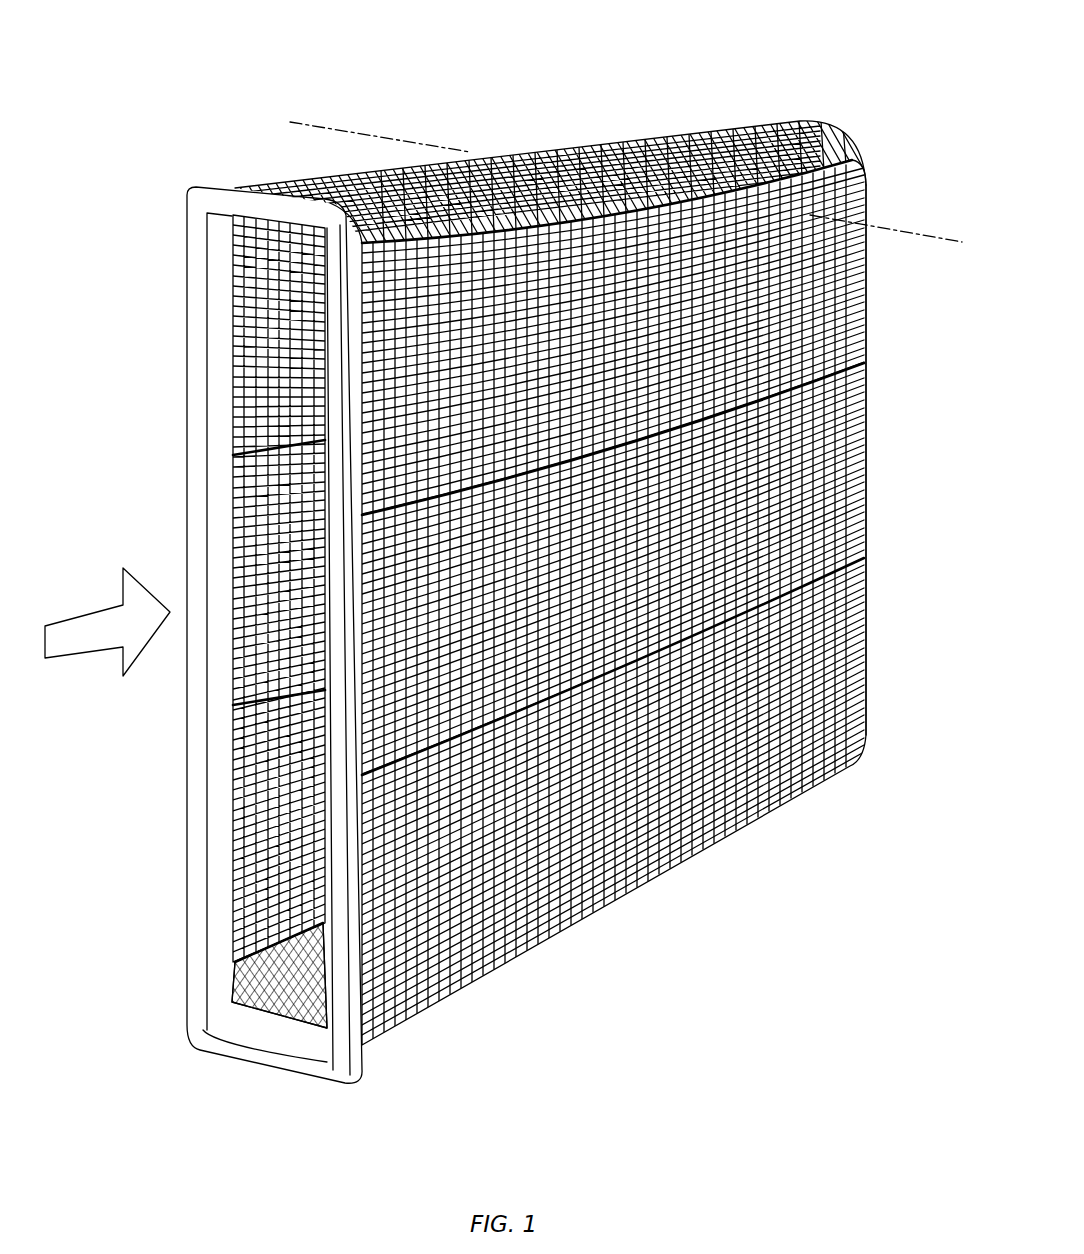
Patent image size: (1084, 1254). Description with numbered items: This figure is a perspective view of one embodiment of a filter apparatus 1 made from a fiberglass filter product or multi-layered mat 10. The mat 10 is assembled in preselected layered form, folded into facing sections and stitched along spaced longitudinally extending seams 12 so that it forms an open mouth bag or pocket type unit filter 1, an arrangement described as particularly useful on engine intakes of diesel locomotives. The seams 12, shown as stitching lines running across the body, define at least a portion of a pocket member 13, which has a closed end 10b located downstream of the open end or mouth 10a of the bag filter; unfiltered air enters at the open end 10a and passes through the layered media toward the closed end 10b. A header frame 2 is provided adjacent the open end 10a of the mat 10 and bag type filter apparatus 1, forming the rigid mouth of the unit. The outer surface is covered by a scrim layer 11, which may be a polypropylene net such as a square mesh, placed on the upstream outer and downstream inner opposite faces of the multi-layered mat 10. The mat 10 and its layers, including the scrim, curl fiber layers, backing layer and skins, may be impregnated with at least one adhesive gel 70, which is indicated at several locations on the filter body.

The filter apparatus 1 is at (140, 205).
The header frame 2 is at (307, 178).
The fiberglass filter product/media 10 is at (555, 150).
The open end 10a is at (178, 378).
The closed end 10b is at (885, 175).
The scrim layer 11 is at (850, 745).
The longitudinally extending seams 12 is at (250, 440).
The pocket member 13 is at (250, 398).
The adhesive gel 70 is at (810, 297).